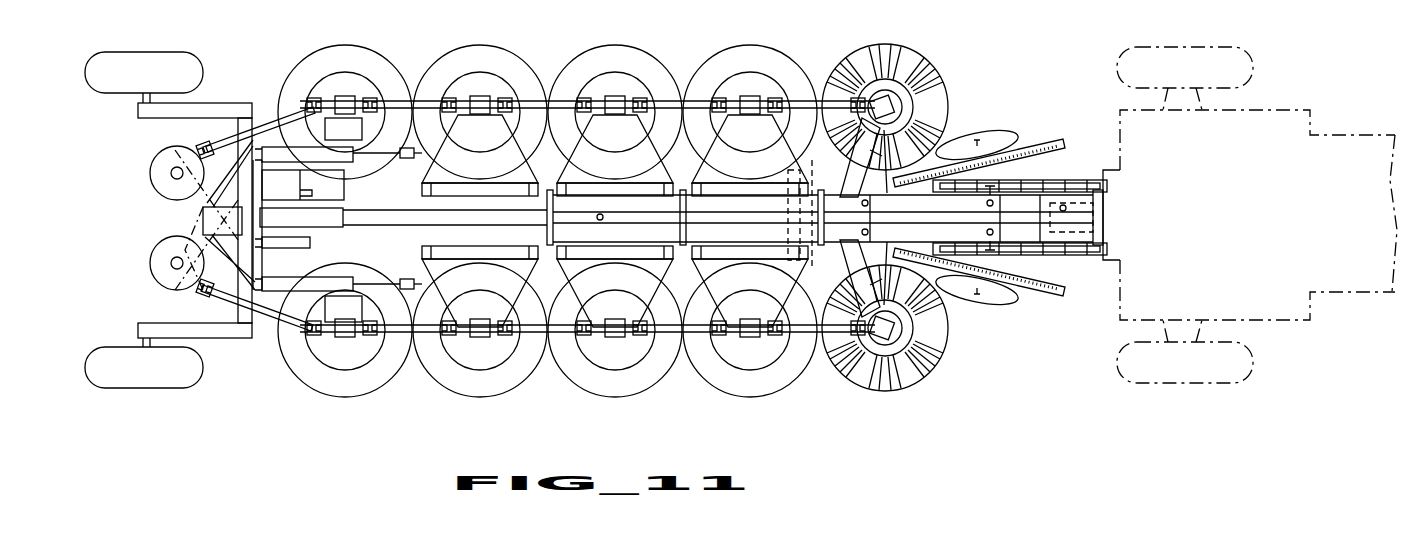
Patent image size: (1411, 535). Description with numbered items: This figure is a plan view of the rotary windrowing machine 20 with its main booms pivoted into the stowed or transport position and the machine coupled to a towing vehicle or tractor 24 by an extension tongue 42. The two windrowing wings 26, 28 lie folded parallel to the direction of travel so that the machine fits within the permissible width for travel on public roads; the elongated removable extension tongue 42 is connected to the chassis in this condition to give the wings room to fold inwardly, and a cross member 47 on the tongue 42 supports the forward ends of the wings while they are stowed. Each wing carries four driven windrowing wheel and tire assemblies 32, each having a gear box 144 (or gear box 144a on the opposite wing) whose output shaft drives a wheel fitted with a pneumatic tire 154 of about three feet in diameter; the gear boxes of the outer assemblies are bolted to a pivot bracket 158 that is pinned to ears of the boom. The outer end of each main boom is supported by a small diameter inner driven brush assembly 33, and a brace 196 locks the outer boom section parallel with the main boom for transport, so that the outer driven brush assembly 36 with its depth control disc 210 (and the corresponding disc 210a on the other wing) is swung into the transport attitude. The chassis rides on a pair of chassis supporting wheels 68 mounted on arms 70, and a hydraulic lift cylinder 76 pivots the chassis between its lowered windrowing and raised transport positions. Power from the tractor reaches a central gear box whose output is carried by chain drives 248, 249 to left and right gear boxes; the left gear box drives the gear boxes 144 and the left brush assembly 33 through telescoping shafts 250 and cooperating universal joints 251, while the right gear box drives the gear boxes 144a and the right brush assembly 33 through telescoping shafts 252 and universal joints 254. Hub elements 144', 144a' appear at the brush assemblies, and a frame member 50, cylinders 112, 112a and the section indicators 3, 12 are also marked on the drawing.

The rotary windrowing machine 20 is at (960, 62).
The towing vehicle or tractor 24 is at (1352, 130).
The windrowing wing 26 is at (479, 198).
The windrowing wing 28 is at (512, 243).
The windrowing wheel and tire assembly 32 is at (292, 53).
The inner driven brush assembly 33 is at (926, 46).
The outer driven brush assembly 36 is at (1037, 141).
The extension tongue 42 is at (1033, 213).
The cross member 47 is at (826, 199).
The frame 50 is at (270, 182).
The chassis supporting wheel 68 is at (144, 60).
The arm 70 is at (136, 110).
The hydraulic lift cylinder 76 is at (308, 250).
The hydraulic cylinder 112 is at (343, 158).
The hydraulic cylinder 112a is at (355, 273).
The gear box 144 is at (547, 94).
The gear box 144a is at (547, 340).
The hub 144' is at (922, 100).
The hub 144a' is at (895, 368).
The pneumatic tire 154 is at (372, 55).
The pivot bracket 158 is at (462, 143).
The brace 196 is at (895, 130).
The depth control disc 210 is at (964, 137).
The disc 210a is at (993, 300).
The chain drive 248 is at (148, 168).
The chain drive 249 is at (152, 256).
The telescoping shaft 250 is at (228, 138).
The universal joint 251 is at (441, 96).
The telescoping shaft 252 is at (275, 340).
The universal joint 254 is at (307, 337).
The section line 3 is at (112, 313).
The section line 12 is at (812, 157).